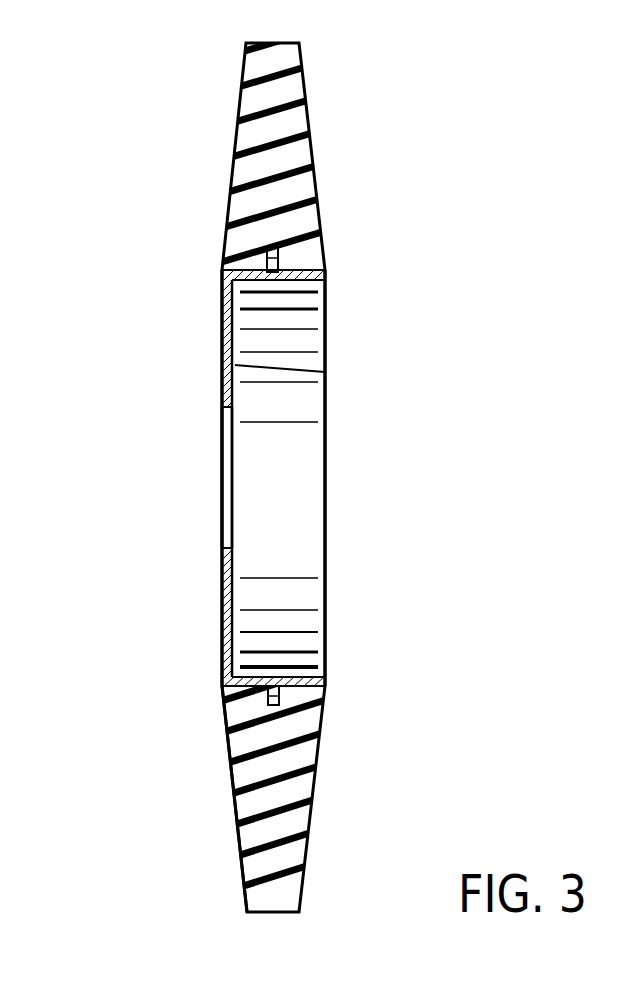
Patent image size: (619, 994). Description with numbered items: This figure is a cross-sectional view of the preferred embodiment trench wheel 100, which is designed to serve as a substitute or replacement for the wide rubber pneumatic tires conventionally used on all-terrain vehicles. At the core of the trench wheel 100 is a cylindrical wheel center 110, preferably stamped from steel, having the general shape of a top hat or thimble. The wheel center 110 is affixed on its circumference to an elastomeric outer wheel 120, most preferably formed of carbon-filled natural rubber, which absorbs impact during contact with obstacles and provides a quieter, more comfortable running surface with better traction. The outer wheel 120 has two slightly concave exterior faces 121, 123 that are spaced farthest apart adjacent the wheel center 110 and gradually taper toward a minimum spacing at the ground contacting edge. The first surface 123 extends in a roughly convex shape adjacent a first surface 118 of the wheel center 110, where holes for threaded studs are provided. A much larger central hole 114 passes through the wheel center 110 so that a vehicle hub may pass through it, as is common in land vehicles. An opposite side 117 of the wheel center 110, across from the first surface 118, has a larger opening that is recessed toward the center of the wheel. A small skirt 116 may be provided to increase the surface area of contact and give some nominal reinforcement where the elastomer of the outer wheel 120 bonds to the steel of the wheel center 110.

The trench wheel 100 is at (416, 82).
The wheel center 110 is at (216, 322).
The central hole 114 is at (228, 483).
The skirt 116 is at (266, 252).
The opposite side 117 is at (325, 372).
The first surface 118 is at (228, 383).
The outer wheel 120 is at (324, 207).
The exterior face 121 is at (316, 765).
The first surface 123 is at (236, 816).